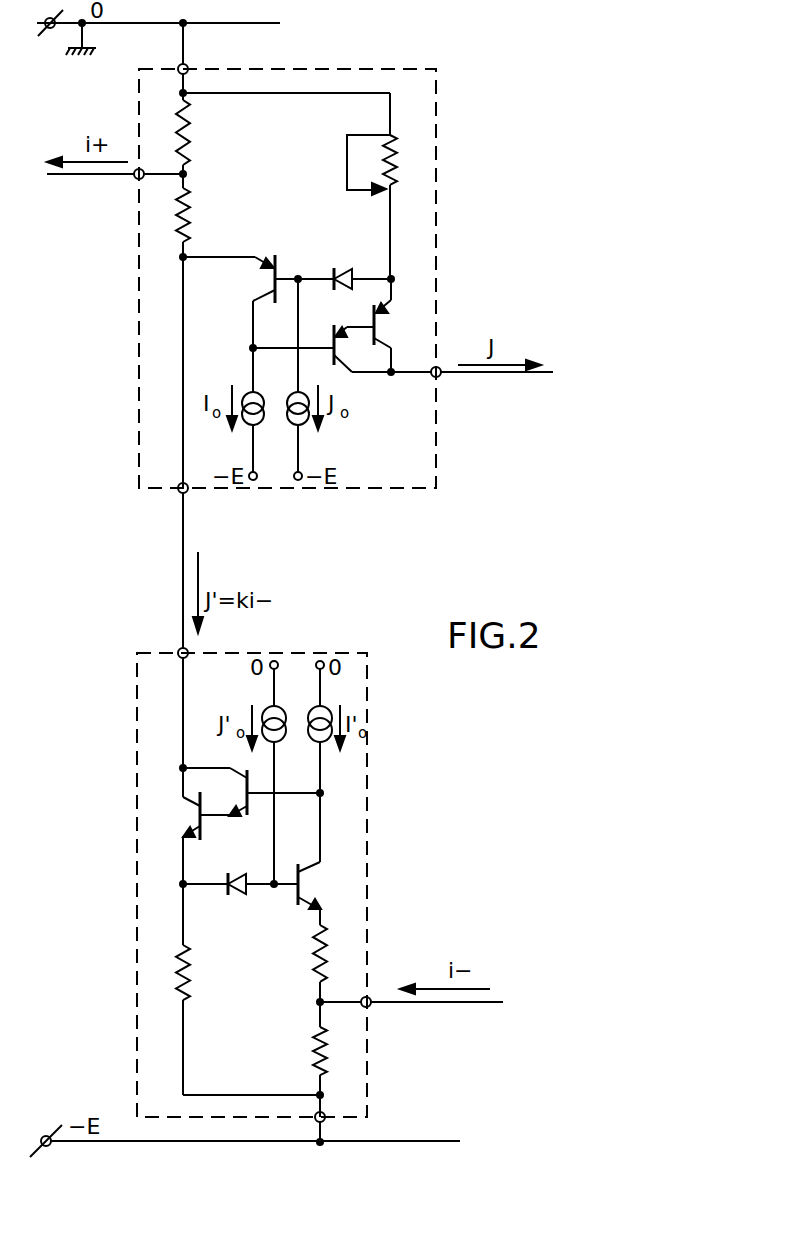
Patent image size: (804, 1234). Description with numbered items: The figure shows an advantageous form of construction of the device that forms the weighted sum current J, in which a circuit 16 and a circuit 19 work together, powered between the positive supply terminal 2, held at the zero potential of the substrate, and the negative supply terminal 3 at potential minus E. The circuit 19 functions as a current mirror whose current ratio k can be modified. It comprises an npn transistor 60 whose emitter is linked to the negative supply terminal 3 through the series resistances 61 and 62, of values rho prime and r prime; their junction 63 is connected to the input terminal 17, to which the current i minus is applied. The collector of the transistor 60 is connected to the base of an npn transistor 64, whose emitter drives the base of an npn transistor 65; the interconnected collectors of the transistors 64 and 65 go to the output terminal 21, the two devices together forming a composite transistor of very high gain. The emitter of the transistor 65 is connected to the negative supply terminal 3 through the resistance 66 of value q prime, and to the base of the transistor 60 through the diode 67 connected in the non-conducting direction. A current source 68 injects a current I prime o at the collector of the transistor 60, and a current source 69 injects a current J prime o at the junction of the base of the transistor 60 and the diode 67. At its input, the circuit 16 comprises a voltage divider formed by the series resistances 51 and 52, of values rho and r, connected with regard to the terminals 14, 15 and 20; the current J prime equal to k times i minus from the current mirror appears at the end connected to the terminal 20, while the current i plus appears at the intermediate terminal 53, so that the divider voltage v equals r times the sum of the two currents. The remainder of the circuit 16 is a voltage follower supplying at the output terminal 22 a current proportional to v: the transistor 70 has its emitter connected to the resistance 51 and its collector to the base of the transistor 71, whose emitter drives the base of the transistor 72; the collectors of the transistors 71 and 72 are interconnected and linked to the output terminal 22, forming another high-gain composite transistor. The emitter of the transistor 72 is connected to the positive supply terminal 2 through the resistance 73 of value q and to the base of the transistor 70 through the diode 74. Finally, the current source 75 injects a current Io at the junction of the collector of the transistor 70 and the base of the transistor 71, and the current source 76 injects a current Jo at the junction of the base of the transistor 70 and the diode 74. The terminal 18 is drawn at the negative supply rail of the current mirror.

The positive supply terminal 2 is at (59, 33).
The negative supply terminal 3 is at (50, 1134).
The terminal 14 is at (135, 179).
The terminal 15 is at (188, 66).
The circuit 16 is at (308, 69).
The input terminal 17 is at (370, 1007).
The negative supply node 18 is at (326, 1121).
The current mirror circuit 19 is at (355, 610).
The terminal 20 is at (178, 493).
The output terminal 21 is at (183, 653).
The output terminal 22 is at (440, 377).
The resistance 51 is at (180, 224).
The resistance 52 is at (180, 128).
The intermediate terminal 53 is at (188, 176).
The npn transistor 60 is at (300, 888).
The resistance 61 is at (323, 970).
The resistance 62 is at (334, 1030).
The junction 63 is at (316, 1003).
The npn transistor 64 is at (251, 792).
The npn transistor 65 is at (196, 816).
The resistance 66 is at (176, 974).
The diode 67 is at (237, 895).
The current source 68 is at (324, 706).
The current source 69 is at (264, 704).
The transistor 70 is at (258, 280).
The transistor 71 is at (322, 348).
The transistor 72 is at (377, 334).
The resistance 73 is at (394, 183).
The diode 74 is at (336, 268).
The current source 75 is at (242, 424).
The current source 76 is at (306, 425).